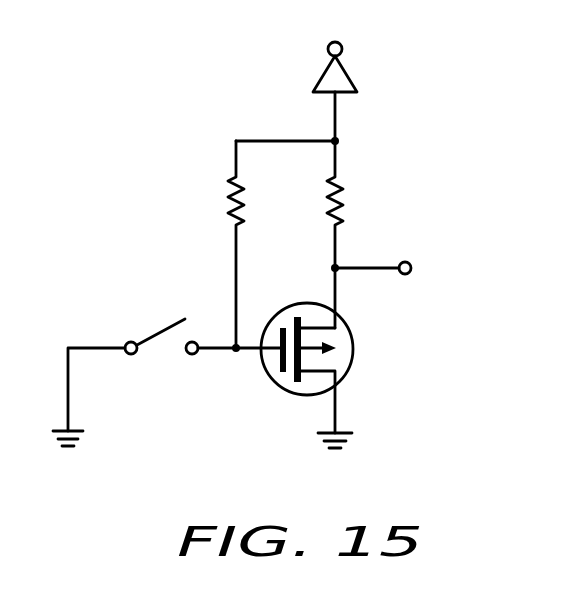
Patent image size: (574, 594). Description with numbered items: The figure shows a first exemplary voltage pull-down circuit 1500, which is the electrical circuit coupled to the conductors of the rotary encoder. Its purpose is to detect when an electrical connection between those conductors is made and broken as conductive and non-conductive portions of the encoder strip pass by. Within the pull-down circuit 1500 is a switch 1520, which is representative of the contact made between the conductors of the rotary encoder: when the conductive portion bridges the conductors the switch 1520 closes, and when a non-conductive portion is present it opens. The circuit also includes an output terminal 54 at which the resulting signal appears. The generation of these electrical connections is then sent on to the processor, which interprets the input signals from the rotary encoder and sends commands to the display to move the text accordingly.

The voltage pull-down circuit 1500 is at (280, 229).
The switch 1520 is at (171, 322).
The bit output terminal 54 is at (404, 261).